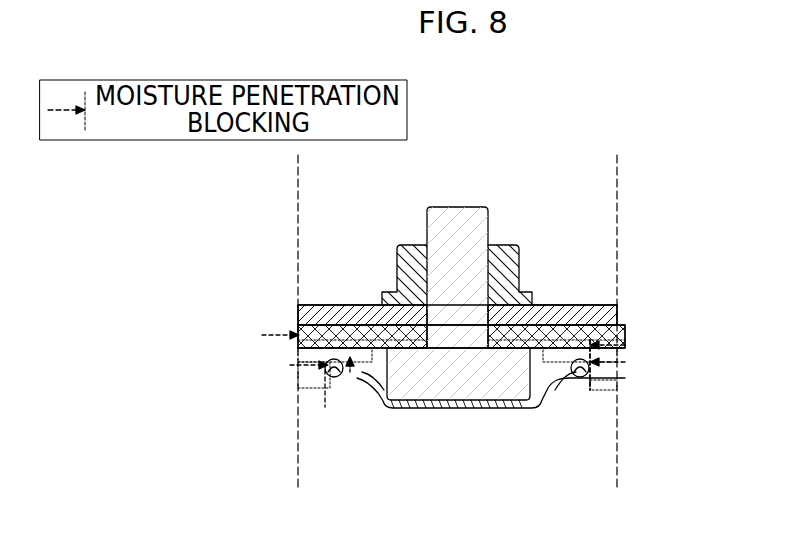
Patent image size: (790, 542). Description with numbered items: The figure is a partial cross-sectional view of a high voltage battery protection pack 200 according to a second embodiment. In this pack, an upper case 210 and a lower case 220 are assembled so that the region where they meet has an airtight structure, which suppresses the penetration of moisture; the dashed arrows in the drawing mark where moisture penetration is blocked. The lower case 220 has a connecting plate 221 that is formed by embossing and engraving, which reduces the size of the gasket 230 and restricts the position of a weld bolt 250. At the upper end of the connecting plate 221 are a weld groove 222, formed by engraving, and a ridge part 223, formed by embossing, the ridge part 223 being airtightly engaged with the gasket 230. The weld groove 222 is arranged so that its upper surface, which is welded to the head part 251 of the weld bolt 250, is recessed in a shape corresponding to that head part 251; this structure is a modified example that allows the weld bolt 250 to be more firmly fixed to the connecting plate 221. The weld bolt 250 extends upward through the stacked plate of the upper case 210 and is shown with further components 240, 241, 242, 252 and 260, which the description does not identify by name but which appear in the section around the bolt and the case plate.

The high voltage battery protection pack 200 is at (478, 108).
The upper case 210 is at (312, 337).
The lower case 220 is at (461, 444).
The connecting plate 221 is at (422, 410).
The weld groove 222 is at (540, 406).
The ridge part 223 is at (303, 385).
The gasket 230 is at (606, 353).
The plate 240 is at (511, 256).
The first plate layer 241 is at (427, 337).
The second plate layer 242 is at (565, 316).
The weld bolt 250 is at (509, 295).
The head part 251 is at (475, 402).
The bolt shaft 252 is at (489, 212).
The nut 260 is at (406, 286).